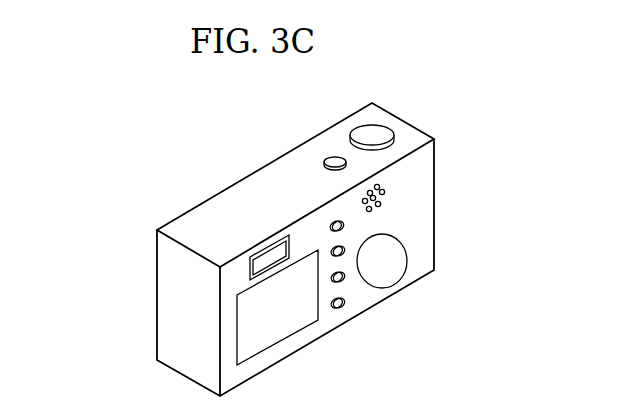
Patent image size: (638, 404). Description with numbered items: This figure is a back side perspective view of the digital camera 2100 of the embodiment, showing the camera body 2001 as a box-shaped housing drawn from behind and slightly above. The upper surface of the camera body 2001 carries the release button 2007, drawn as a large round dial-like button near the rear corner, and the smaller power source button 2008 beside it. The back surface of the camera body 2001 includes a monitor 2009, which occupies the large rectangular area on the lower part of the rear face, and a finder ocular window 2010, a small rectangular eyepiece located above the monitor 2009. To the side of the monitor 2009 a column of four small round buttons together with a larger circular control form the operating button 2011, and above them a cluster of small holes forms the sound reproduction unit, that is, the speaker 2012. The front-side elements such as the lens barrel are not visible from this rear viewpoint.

The digital camera 2100 is at (108, 142).
The camera body 2001 is at (198, 225).
The release button 2007 is at (376, 136).
The power source button 2008 is at (333, 156).
The monitor 2009 is at (273, 330).
The finder ocular window 2010 is at (274, 248).
The operating button 2011 is at (344, 229).
The sound reproduction unit (speaker) 2012 is at (383, 185).